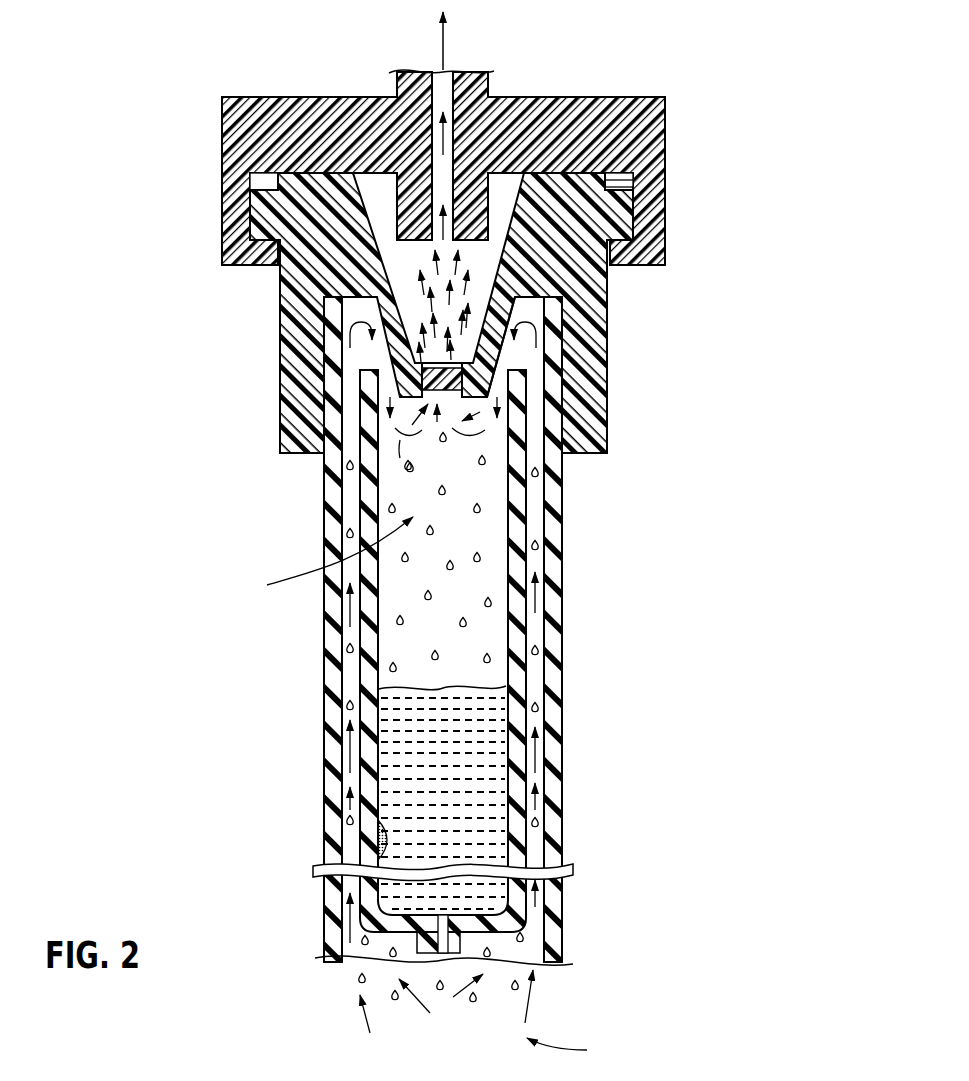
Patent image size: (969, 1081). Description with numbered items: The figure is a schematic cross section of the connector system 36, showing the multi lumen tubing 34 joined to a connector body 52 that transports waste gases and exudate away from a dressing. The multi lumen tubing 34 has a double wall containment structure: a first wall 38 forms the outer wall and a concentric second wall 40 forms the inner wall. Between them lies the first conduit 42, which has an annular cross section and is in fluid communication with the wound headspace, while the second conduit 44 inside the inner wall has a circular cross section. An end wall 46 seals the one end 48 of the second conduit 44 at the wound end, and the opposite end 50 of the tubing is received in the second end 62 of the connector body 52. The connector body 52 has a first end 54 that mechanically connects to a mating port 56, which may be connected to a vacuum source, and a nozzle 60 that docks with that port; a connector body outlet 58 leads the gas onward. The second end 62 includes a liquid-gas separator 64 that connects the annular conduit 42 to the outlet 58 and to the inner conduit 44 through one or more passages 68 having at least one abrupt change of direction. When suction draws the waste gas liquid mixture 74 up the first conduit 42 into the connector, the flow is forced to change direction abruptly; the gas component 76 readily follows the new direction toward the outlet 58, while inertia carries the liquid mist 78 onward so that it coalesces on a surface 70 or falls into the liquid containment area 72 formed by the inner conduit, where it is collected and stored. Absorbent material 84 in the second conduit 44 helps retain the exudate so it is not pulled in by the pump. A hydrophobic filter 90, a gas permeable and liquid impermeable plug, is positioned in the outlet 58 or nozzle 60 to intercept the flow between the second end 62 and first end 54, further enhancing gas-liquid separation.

The multi lumen tubing 34 is at (594, 737).
The connector system 36 is at (160, 239).
The first wall 38 is at (322, 624).
The second wall 40 is at (380, 650).
The first conduit 42 is at (335, 817).
The second conduit 44 is at (324, 560).
The end wall 46 is at (412, 916).
The one end 48 is at (602, 970).
The opposite end 50 is at (622, 313).
The connector body 52 is at (607, 348).
The first end 54 is at (638, 178).
The mating port 56 is at (222, 148).
The connector body outlet 58 is at (400, 440).
The nozzle 60 is at (560, 276).
The second end 62 is at (290, 456).
The liquid-gas separator 64 is at (598, 393).
The passage 68 is at (420, 367).
The surface 70 is at (372, 326).
The liquid containment area 72 is at (472, 604).
The waste gas liquid mixture 74 is at (575, 1051).
The gas component 76 is at (370, 1027).
The liquid mist 78 is at (348, 709).
The absorbent material 84 is at (378, 840).
The hydrophobic filter 90 is at (425, 387).